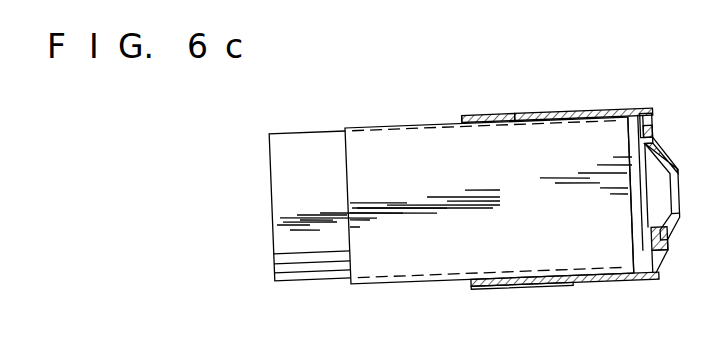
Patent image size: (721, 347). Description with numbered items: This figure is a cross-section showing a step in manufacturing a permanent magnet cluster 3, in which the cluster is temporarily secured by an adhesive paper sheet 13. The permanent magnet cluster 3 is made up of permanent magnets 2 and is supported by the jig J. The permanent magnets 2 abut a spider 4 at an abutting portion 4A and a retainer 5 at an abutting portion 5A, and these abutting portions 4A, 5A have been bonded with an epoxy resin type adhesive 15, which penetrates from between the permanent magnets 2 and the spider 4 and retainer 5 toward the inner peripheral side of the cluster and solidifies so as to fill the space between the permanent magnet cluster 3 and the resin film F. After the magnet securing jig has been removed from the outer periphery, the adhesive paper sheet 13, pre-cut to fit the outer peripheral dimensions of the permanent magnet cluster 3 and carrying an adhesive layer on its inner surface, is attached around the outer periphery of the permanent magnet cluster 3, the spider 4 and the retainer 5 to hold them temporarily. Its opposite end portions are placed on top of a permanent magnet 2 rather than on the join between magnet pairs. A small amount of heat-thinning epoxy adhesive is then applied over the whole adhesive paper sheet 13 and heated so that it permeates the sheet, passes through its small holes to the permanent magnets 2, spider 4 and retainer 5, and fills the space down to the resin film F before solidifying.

The permanent magnet 2 is at (509, 292).
The permanent magnet cluster 3 is at (523, 312).
The spider 4 is at (652, 125).
The abutting portion 4A is at (557, 121).
The retainer 5 is at (460, 126).
The abutting portion 5A is at (467, 123).
The adhesive paper sheet 13 is at (584, 297).
The epoxy resin type adhesive 15 is at (556, 89).
The resin film F is at (387, 285).
The jig J is at (269, 199).